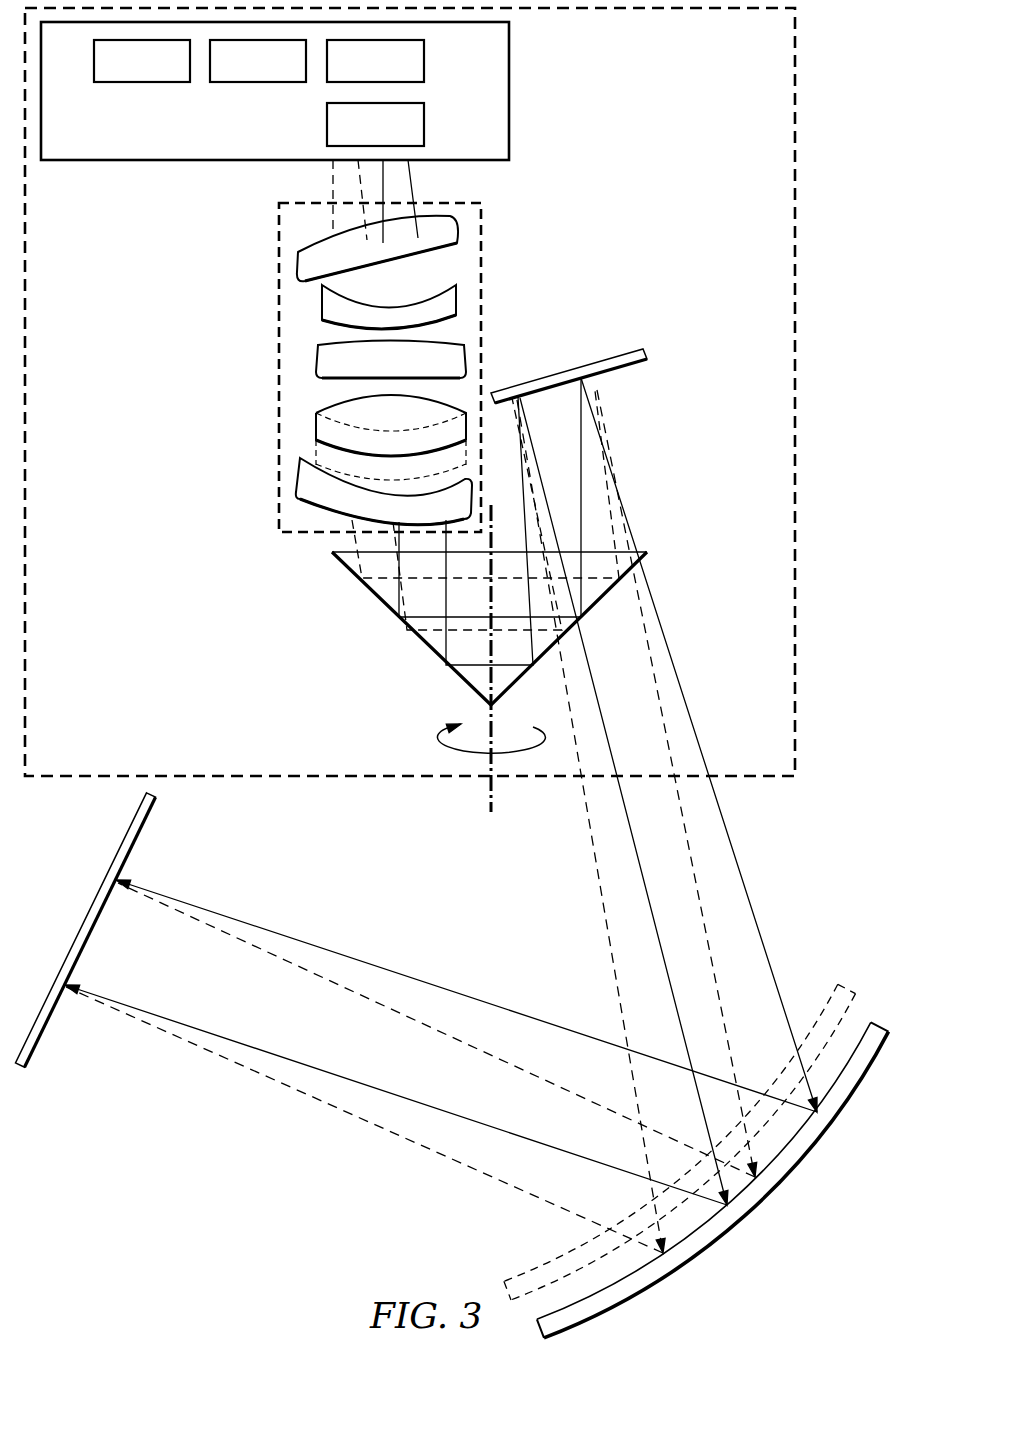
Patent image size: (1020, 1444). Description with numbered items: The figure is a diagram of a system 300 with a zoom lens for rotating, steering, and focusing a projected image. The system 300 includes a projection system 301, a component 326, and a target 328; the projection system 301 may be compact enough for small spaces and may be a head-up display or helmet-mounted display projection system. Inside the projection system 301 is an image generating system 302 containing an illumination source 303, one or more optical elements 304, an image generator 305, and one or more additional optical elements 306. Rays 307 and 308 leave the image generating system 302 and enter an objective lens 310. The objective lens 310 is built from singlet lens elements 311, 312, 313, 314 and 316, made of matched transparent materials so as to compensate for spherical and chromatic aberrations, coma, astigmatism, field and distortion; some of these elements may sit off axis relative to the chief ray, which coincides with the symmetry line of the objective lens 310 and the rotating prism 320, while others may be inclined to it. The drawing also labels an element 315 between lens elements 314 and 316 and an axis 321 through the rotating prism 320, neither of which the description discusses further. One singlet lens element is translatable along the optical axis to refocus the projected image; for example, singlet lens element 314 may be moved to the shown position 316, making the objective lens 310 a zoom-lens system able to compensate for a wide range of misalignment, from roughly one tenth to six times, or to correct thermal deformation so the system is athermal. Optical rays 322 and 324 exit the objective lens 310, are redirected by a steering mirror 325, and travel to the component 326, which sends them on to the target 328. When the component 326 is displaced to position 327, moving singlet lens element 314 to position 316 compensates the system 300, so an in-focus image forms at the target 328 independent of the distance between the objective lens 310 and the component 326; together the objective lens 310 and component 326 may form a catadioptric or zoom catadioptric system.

The system 300 is at (150, 1212).
The projection system 301 is at (800, 390).
The image generating system 302 is at (514, 88).
The illumination source 303 is at (146, 83).
The optical elements 304 is at (262, 83).
The image generator 305 is at (425, 59).
The additional optical elements 306 is at (425, 122).
The ray 307 is at (333, 184).
The ray 308 is at (384, 180).
The objective lens 310 is at (460, 264).
The singlet lens element 311 is at (300, 268).
The singlet lens element 312 is at (322, 305).
The singlet lens element 313 is at (316, 358).
The singlet lens element 314 is at (316, 423).
The fifth lens 315 is at (316, 452).
The singlet lens element position 316 is at (316, 512).
The rotating prism 320 is at (430, 640).
The rotation axis 321 is at (490, 788).
The optical ray 322 is at (527, 457).
The optical ray 324 is at (527, 527).
The steering mirror 325 is at (568, 370).
The component 326 is at (760, 1206).
The displaced position 327 is at (850, 988).
The target 328 is at (90, 910).